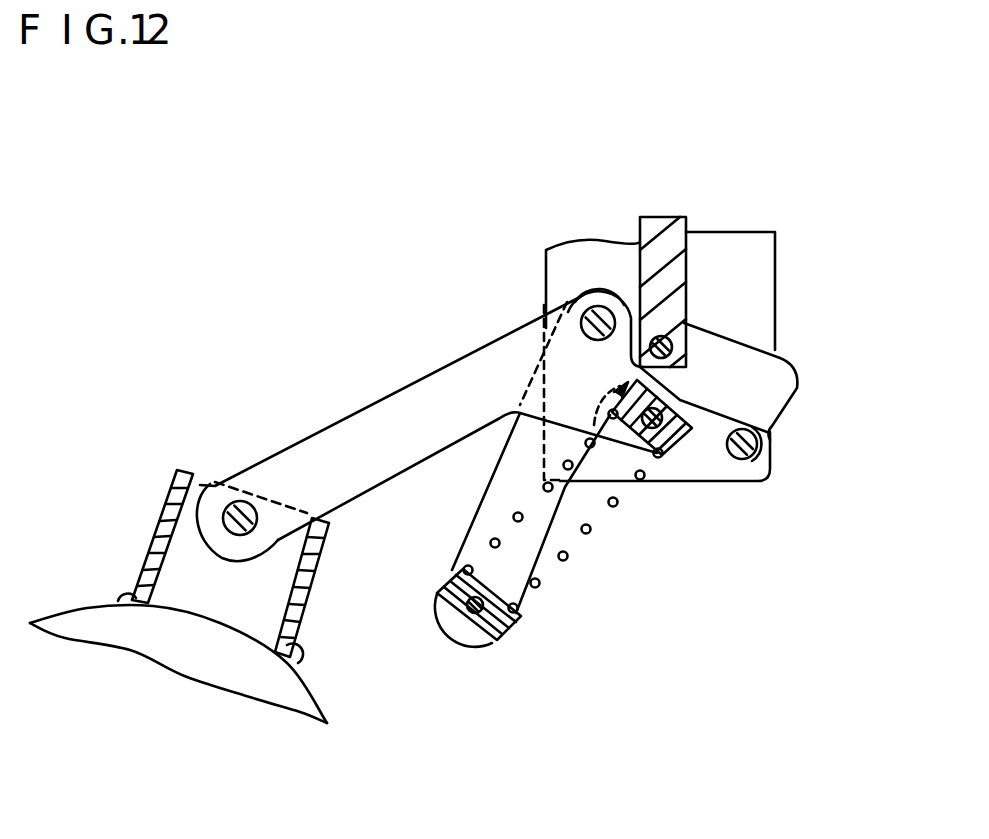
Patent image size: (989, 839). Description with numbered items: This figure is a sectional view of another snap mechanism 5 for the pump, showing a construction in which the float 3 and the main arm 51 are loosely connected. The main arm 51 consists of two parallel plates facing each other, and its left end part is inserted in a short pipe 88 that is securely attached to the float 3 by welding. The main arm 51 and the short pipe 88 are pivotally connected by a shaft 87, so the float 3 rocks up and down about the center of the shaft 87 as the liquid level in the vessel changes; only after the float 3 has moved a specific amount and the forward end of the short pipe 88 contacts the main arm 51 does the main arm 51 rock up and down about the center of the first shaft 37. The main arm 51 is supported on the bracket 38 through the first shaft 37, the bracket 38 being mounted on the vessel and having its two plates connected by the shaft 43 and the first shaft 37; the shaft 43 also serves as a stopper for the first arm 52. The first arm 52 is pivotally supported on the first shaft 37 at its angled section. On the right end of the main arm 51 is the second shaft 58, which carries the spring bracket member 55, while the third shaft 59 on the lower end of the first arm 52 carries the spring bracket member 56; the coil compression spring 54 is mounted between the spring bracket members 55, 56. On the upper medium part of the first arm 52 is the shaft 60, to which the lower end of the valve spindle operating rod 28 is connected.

The float 3 is at (297, 697).
The snap mechanism 5 is at (690, 496).
The valve spindle operating rod 28 is at (663, 232).
The first shaft 37 is at (572, 302).
The bracket 38 is at (760, 248).
The shaft 43 is at (760, 447).
The main arm 51 is at (415, 397).
The first arm 52 is at (728, 348).
The coil compression spring 54 is at (568, 558).
The spring bracket member 55 is at (670, 447).
The spring bracket member 56 is at (484, 628).
The second shaft 58 is at (682, 403).
The third shaft 59 is at (507, 622).
The shaft 60 is at (684, 318).
The shaft 87 is at (227, 512).
The short pipe 88 is at (147, 565).